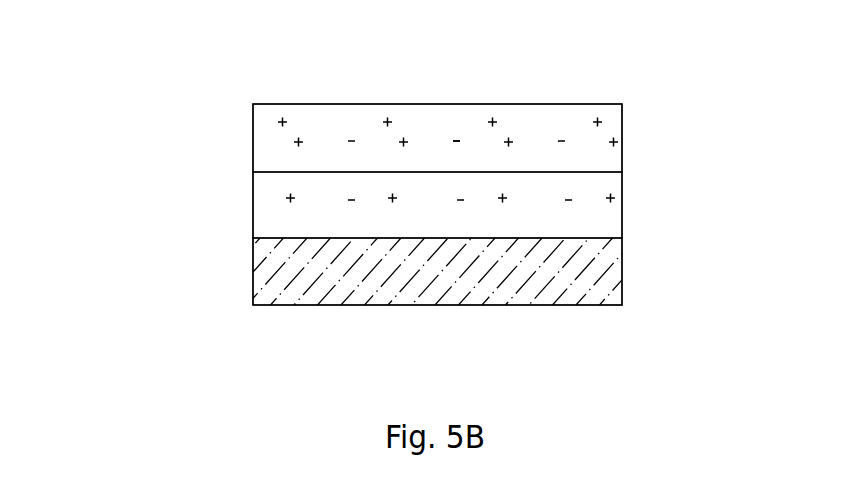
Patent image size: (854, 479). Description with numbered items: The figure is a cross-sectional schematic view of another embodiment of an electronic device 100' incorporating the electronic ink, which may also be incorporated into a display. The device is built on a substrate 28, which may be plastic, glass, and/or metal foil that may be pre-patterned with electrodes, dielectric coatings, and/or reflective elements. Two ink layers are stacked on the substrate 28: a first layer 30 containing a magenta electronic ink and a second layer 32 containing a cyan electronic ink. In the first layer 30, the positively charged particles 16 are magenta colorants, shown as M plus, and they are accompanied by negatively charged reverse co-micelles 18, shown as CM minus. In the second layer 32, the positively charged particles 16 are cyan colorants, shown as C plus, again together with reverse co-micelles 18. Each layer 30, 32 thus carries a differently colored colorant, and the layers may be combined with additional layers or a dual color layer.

The electronic device 100' is at (339, 204).
The second layer 32 is at (637, 132).
The first layer 30 is at (640, 201).
The substrate 28 is at (638, 278).
The positively charged particles 16 is at (590, 115).
The reverse co-micelles 18 is at (430, 133).